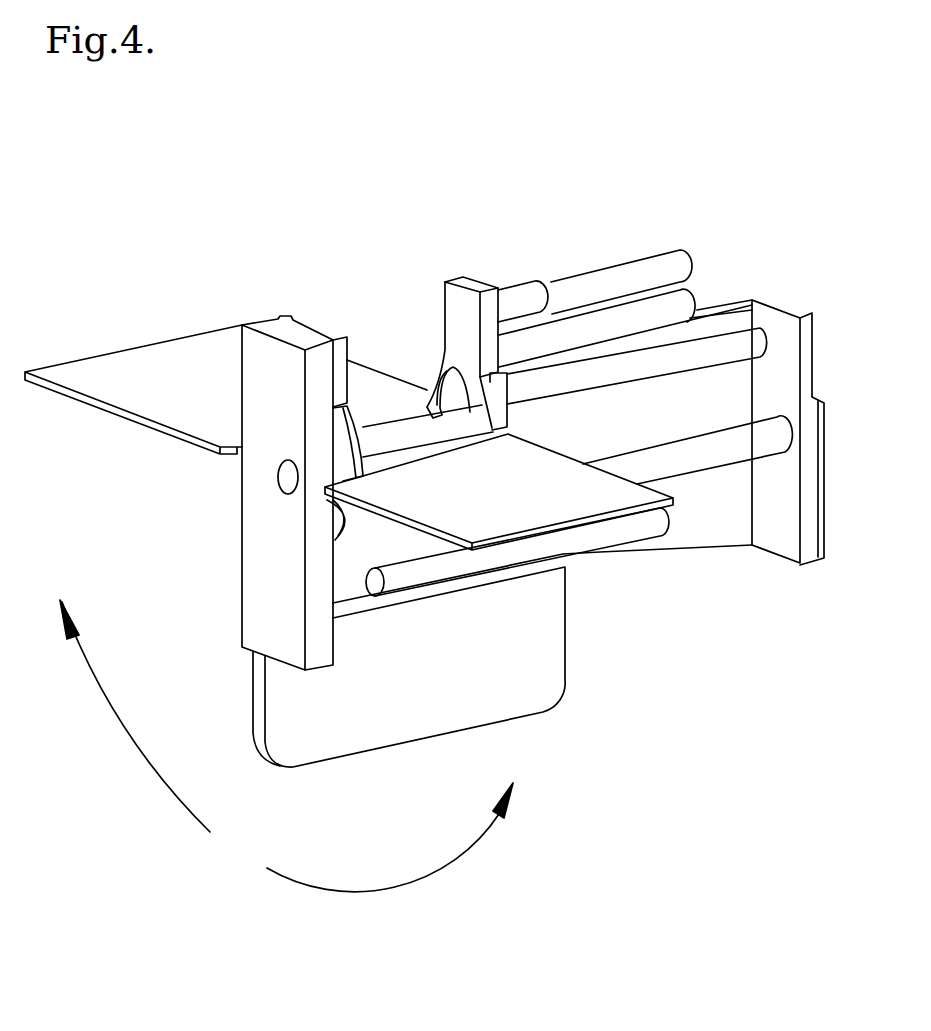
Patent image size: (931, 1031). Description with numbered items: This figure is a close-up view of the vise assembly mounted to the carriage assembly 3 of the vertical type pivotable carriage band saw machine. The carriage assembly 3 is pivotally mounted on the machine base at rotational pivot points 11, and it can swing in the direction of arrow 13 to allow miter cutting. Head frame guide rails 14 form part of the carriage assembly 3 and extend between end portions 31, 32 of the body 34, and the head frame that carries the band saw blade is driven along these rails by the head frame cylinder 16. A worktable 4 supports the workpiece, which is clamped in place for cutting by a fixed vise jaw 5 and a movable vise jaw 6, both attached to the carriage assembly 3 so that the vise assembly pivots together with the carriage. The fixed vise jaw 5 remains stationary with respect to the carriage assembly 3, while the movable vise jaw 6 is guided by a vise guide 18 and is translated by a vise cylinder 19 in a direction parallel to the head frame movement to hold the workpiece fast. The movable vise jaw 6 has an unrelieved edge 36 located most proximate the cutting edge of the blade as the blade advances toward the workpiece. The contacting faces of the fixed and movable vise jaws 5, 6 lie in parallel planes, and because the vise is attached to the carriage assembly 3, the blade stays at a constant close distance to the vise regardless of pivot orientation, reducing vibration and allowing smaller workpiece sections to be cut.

The carriage assembly 3 is at (508, 690).
The worktable 4 is at (476, 524).
The fixed vise jaw 5 is at (257, 419).
The movable vise jaw 6 is at (459, 321).
The rotational pivot points 11 is at (280, 478).
The arrow 13 is at (286, 746).
The head frame guide rails 14 is at (585, 383).
The head frame cylinder 16 is at (733, 443).
The vise guide 18 is at (515, 300).
The vise cylinder 19 is at (596, 327).
The end portion 31 is at (253, 597).
The end portion 32 is at (816, 520).
The body 34 is at (715, 318).
The unrelieved edge 36 is at (500, 403).